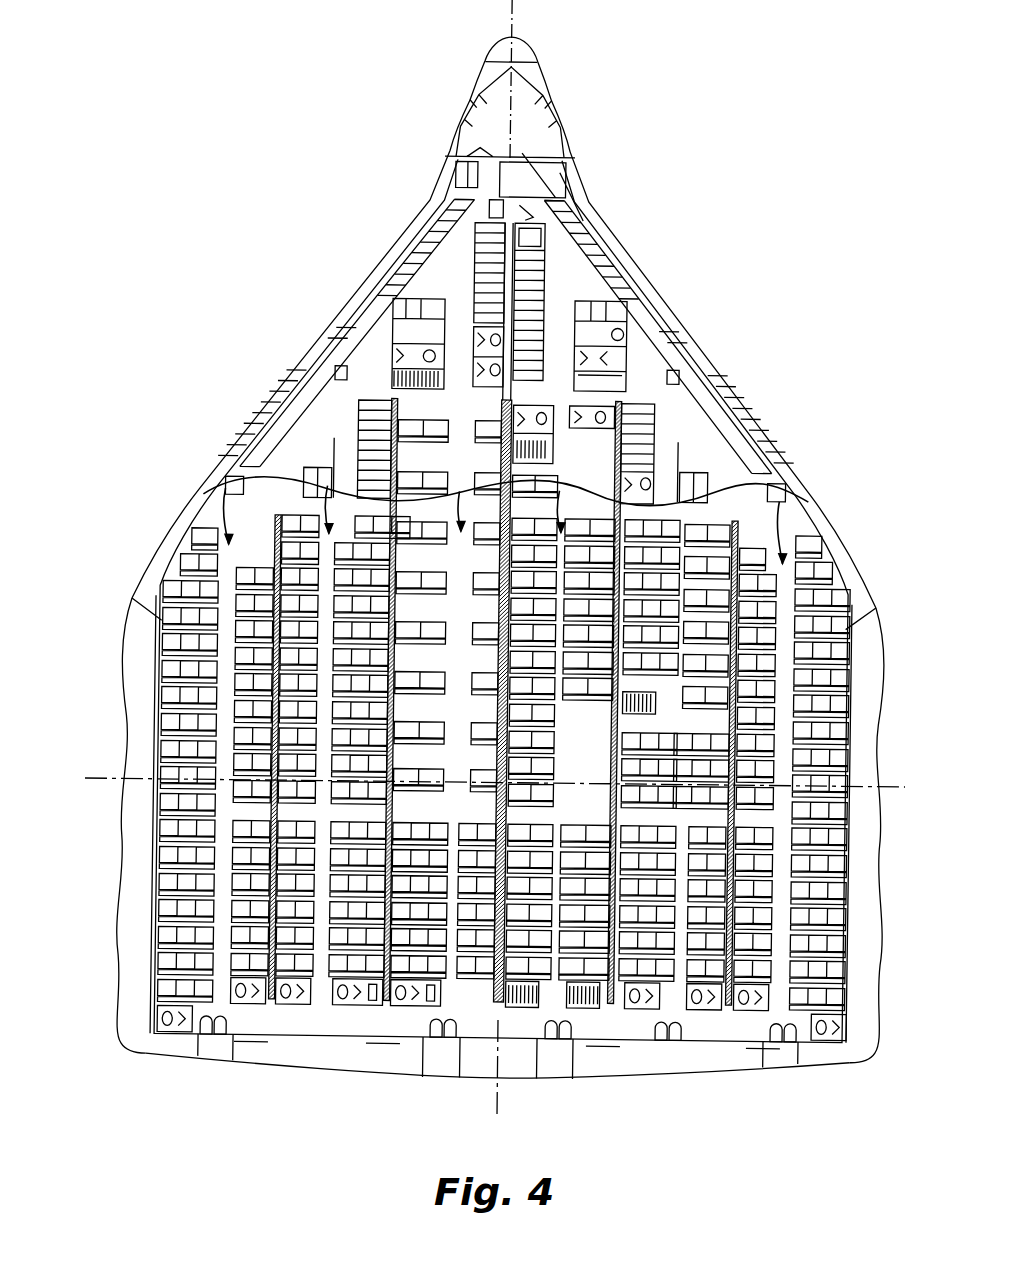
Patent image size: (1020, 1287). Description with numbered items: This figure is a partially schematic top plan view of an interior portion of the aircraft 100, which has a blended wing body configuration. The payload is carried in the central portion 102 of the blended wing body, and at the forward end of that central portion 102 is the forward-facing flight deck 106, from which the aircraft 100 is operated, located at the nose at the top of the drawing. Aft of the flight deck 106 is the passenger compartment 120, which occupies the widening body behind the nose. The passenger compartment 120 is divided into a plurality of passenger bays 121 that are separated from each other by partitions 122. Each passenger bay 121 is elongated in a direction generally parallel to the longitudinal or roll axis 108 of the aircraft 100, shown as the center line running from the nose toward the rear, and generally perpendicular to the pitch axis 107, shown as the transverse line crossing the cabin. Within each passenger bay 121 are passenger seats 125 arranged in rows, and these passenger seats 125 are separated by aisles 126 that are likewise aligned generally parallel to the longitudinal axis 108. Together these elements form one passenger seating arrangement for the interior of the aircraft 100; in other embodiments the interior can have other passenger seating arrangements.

The aircraft 100 is at (748, 272).
The central portion 102 is at (768, 440).
The flight deck 106 is at (545, 110).
The pitch axis 107 is at (105, 780).
The longitudinal axis 108 is at (505, 1100).
The passenger compartment 120 is at (338, 378).
The passenger bay 121 is at (222, 490).
The partition 122 is at (800, 1005).
The passenger seat 125 is at (238, 725).
The aisle 126 is at (222, 843).